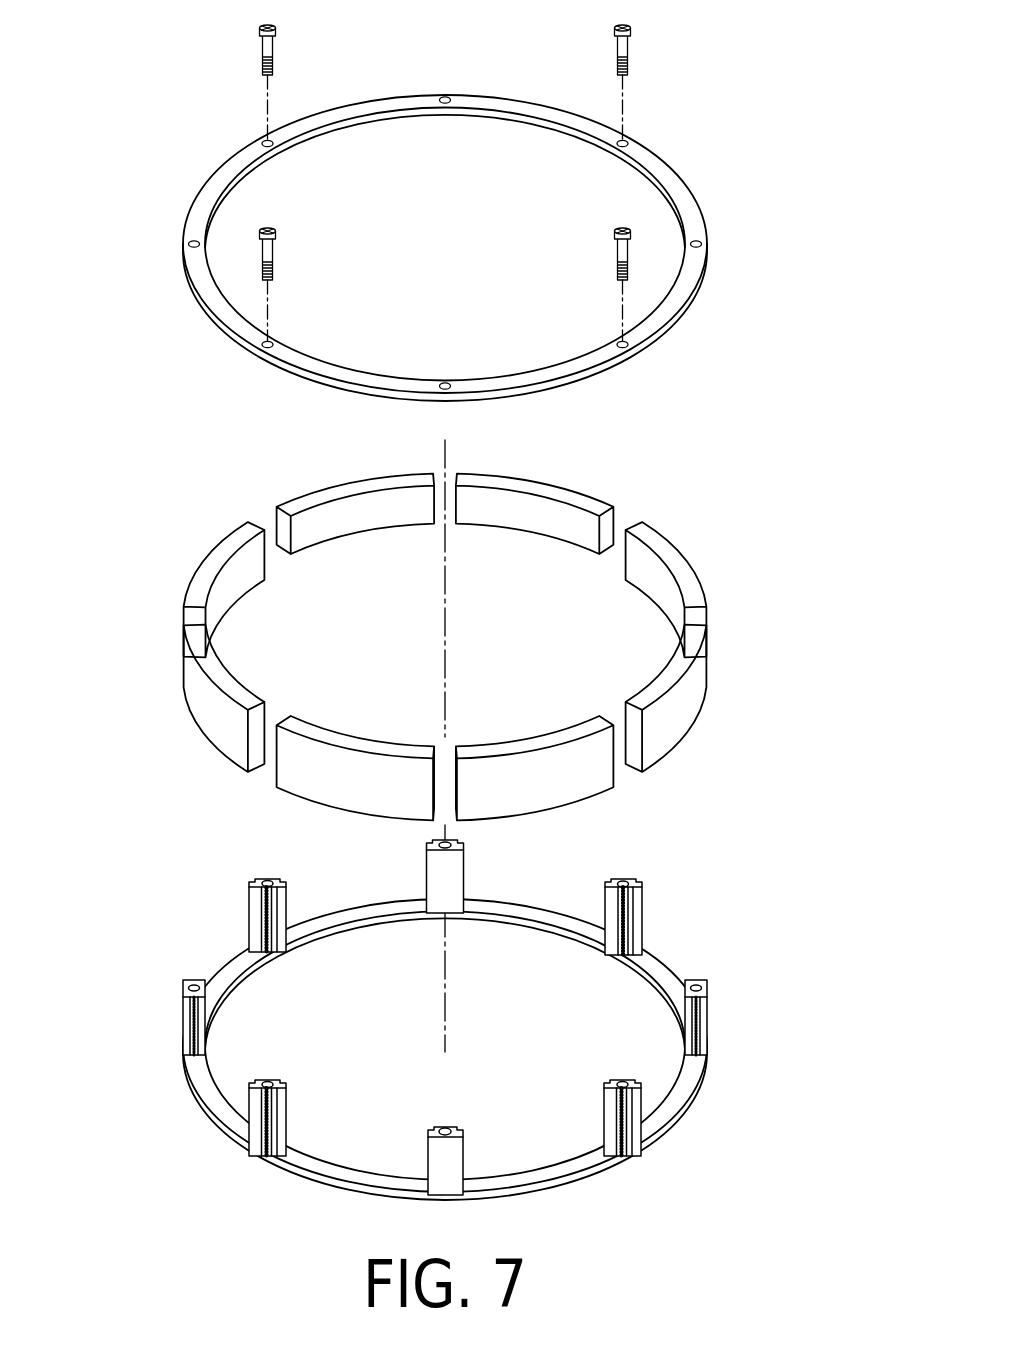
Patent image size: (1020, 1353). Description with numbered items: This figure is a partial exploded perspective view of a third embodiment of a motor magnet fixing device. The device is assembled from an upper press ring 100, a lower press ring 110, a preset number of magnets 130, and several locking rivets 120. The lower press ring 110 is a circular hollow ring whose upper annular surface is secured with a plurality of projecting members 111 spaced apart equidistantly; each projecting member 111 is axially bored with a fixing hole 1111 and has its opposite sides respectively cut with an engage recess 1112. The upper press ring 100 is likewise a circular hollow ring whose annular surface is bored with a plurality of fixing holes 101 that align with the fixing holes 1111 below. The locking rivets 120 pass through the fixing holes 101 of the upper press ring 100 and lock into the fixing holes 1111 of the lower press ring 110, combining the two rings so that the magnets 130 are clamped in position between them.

The upper press ring 100 is at (172, 187).
The fixing holes 101 is at (631, 345).
The lower press ring 110 is at (175, 1094).
The projecting members 111 is at (626, 878).
The fixing hole 1111 is at (629, 882).
The engage recess 1112 is at (641, 906).
The locking rivets 120 is at (236, 37).
The magnets 130 is at (175, 562).